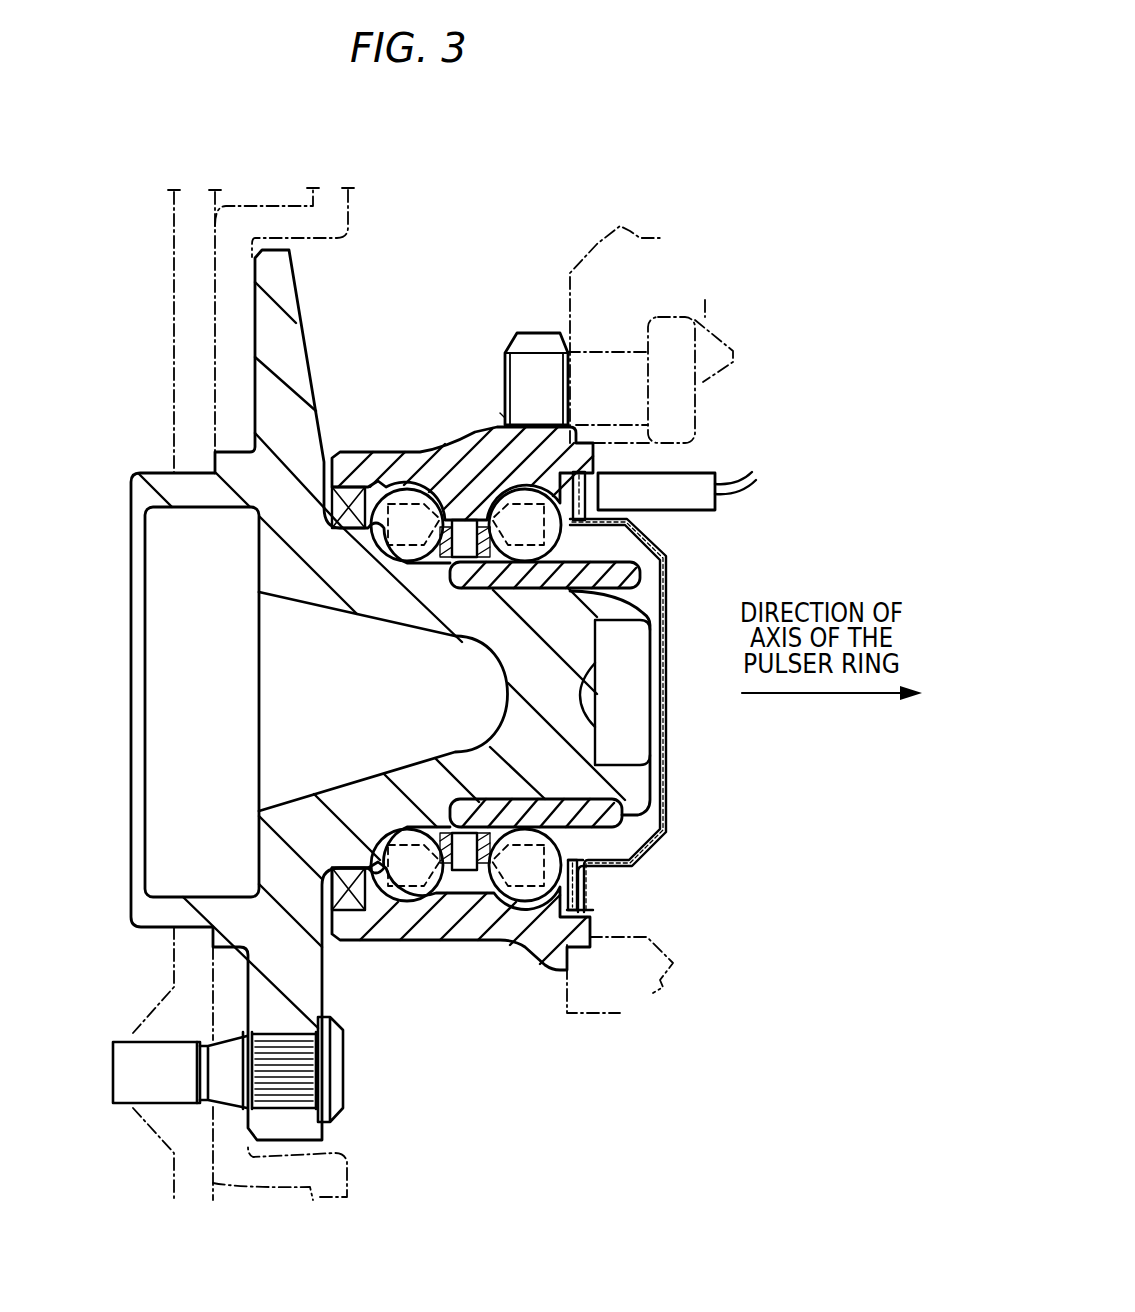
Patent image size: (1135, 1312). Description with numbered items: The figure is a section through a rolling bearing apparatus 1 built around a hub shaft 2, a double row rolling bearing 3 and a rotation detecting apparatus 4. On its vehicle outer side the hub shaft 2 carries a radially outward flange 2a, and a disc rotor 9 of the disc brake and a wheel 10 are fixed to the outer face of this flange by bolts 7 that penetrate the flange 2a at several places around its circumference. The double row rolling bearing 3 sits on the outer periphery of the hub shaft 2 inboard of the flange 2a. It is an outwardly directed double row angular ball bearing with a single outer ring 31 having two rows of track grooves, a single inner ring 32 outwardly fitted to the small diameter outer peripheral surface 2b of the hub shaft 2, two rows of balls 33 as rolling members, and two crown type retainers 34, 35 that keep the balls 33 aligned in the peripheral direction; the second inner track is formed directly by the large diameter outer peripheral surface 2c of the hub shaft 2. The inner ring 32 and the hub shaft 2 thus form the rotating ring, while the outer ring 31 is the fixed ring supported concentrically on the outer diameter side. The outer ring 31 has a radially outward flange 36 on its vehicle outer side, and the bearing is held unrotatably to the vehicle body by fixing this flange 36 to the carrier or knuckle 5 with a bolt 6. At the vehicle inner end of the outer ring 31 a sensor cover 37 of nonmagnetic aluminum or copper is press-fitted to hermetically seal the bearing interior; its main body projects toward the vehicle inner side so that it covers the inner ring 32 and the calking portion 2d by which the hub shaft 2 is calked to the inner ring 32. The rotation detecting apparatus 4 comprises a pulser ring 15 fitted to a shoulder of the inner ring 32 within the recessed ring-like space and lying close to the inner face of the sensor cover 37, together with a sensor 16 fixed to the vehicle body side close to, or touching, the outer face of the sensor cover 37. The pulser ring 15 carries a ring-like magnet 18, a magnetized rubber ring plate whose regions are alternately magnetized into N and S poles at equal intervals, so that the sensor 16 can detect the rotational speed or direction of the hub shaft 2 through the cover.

The rolling bearing apparatus 1 is at (120, 342).
The hub shaft 2 is at (152, 470).
The flange 2a is at (291, 341).
The small diameter outer peripheral surface 2b is at (497, 800).
The large diameter outer peripheral surface 2c is at (432, 818).
The calking portion 2d is at (641, 606).
The double row rolling bearing 3 is at (416, 438).
The rotation detecting apparatus 4 is at (697, 456).
The carrier (or knuckle) 5 is at (597, 244).
The bolt 6 is at (498, 413).
The bolts 7 is at (343, 1068).
The disc rotor 9 is at (350, 203).
The wheel 10 is at (174, 272).
The pulser ring 15 is at (597, 541).
The sensor 16 is at (718, 504).
The ring-like magnet 18 is at (592, 892).
The outer ring 31 is at (444, 452).
The inner ring 32 is at (477, 586).
The balls 33 is at (402, 892).
The crown type retainer 34 is at (484, 870).
The crown type retainer 35 is at (437, 873).
The flange 36 is at (537, 332).
The sensor cover 37 is at (668, 746).